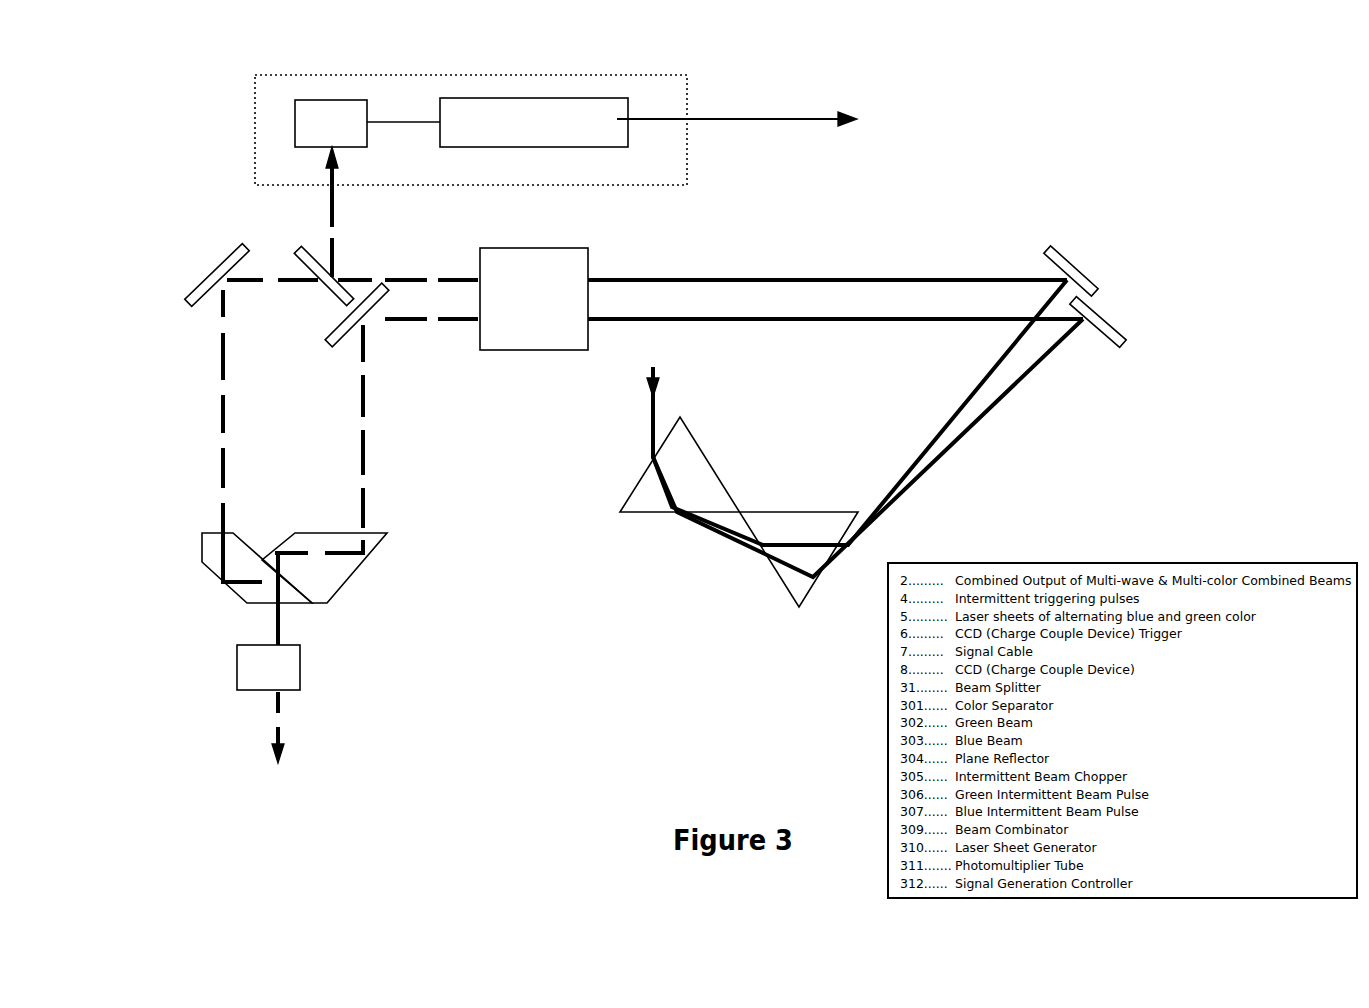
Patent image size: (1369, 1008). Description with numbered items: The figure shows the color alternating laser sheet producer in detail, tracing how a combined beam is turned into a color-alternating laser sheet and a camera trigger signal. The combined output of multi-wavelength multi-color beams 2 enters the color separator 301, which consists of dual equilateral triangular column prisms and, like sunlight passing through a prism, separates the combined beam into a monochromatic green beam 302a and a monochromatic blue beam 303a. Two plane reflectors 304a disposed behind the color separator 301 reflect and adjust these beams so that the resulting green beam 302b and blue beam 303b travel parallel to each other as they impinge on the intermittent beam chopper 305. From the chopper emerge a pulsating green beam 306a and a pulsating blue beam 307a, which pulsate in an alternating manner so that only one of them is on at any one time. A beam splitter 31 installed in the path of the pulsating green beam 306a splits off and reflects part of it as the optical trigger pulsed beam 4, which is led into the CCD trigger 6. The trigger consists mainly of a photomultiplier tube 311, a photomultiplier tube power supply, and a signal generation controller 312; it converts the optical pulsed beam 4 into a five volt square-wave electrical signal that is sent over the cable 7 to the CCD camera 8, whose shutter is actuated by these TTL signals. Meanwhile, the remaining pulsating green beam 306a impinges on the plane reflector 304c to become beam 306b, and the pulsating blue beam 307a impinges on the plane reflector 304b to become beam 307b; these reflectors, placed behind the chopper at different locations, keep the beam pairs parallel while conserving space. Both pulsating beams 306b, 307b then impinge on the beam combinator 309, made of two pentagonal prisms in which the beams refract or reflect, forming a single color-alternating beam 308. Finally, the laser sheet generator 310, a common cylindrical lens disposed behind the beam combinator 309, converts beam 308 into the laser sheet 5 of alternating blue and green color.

The combined output of multi-wavelength multi-color beams 2 is at (657, 410).
The optical trigger pulsed beam 4 is at (332, 208).
The laser sheet 5 is at (282, 743).
The CCD trigger 6 is at (254, 113).
The cable 7 is at (750, 119).
The CCD camera 8 is at (864, 121).
The beam splitter 31 is at (327, 285).
The color separator 301 is at (807, 512).
The monochromatic green beam 302a is at (950, 408).
The monochromatic green beam 302b is at (737, 278).
The monochromatic blue beam 303a is at (973, 428).
The monochromatic blue beam 303b is at (828, 320).
The plane reflectors 304a is at (1100, 310).
The plane reflector 304b is at (332, 338).
The plane reflector 304c is at (225, 263).
The intermittent beam chopper 305 is at (513, 247).
The pulsating green beam 306a is at (400, 278).
The pulsating green beam 306b is at (223, 422).
The pulsating blue beam 307a is at (445, 320).
The pulsating blue beam 307b is at (367, 500).
The single color-alternating beam 308 is at (268, 635).
The beam combinator 309 is at (322, 528).
The laser sheet generator 310 is at (300, 673).
The photomultiplier tube 311 is at (310, 102).
The signal generation controller 312 is at (533, 98).